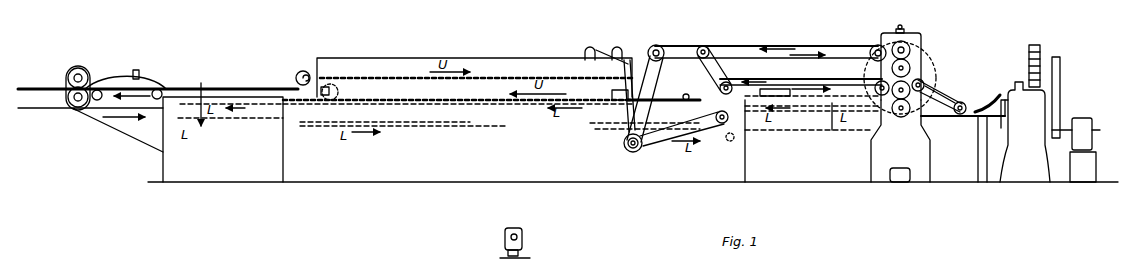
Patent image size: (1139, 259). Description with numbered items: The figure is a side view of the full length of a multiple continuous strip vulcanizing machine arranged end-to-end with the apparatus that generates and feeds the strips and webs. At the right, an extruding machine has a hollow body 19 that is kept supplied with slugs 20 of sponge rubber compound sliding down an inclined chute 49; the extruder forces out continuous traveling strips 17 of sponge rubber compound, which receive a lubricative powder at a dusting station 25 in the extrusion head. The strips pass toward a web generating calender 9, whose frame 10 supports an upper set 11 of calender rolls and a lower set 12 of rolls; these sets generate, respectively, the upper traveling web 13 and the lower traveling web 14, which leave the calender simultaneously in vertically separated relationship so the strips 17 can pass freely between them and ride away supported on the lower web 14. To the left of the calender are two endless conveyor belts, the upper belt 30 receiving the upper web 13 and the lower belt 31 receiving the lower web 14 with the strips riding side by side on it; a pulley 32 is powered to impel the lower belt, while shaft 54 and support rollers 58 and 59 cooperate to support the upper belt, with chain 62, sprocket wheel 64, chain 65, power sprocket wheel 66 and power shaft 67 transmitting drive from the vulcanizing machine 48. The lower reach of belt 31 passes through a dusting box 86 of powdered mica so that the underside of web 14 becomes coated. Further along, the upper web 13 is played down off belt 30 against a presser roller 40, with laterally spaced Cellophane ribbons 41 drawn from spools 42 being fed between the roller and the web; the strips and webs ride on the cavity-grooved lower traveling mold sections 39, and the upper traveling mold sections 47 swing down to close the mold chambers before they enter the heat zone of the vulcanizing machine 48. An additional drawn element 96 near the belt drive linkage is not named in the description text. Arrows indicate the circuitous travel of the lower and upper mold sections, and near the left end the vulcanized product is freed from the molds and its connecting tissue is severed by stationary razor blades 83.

The web generating calender 9 is at (928, 46).
The frame 10 is at (901, 159).
The upper set of calender rolls 11 is at (895, 44).
The lower set of calender rolls 12 is at (350, 88).
The upper traveling web 13 is at (795, 45).
The lower traveling web 14 is at (800, 78).
The strips of sponge rubber compound 17 is at (700, 88).
The extruder body 19 is at (1025, 132).
The slugs of sponge rubber compound 20 is at (1038, 45).
The dusting station 25 is at (1005, 88).
The upper conveyor belt 30 is at (738, 45).
The lower conveyor belt 31 is at (730, 120).
The pulley 32 is at (804, 89).
The lower traveling mold sections 39 is at (270, 121).
The presser roller 40 is at (612, 95).
The Cellophane ribbons 41 is at (300, 70).
The spools 42 is at (584, 46).
The upper traveling mold sections 47 is at (366, 78).
The vulcanizing machine 48 is at (480, 56).
The inclined chute 49 is at (1030, 50).
The shaft 54 is at (665, 48).
The support roller 58 is at (708, 45).
The support roller 59 is at (874, 46).
The chain 62 is at (722, 62).
The sprocket wheel 64 is at (660, 45).
The chain 65 is at (662, 60).
The power sprocket wheel 66 is at (625, 147).
The power shaft 67 is at (640, 150).
The razor blades 83 is at (139, 72).
The dusting box 86 is at (735, 140).
The arm 96 is at (650, 108).